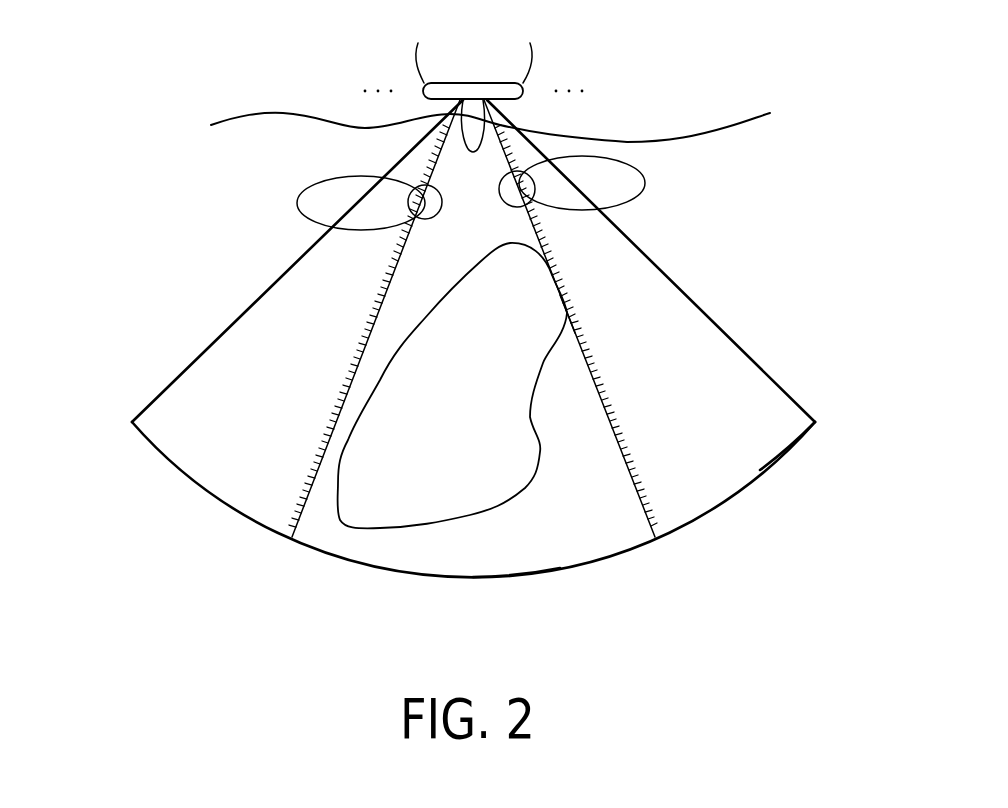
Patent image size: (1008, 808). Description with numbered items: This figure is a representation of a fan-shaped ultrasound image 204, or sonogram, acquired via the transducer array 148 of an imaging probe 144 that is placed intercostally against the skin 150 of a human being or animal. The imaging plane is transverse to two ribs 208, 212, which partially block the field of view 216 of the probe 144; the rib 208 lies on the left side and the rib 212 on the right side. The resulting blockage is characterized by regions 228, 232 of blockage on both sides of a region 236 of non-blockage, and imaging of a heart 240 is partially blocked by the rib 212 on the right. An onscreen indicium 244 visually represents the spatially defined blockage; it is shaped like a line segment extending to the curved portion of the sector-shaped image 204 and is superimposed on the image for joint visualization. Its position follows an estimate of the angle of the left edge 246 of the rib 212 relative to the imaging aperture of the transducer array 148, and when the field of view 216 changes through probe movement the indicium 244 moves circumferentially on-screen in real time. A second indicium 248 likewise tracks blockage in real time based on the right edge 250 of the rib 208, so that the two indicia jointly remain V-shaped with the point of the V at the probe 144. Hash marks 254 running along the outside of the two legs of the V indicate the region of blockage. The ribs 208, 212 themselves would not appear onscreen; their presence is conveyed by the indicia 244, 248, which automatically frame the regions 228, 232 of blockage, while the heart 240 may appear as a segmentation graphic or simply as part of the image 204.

The imaging probe 144 is at (408, 50).
The transducer array 148 is at (487, 83).
The skin 150 is at (733, 122).
The ultrasound image 204 is at (700, 558).
The rib 208 is at (297, 203).
The rib 212 is at (645, 183).
The field of view 216 is at (705, 312).
The region of blockage 228 is at (178, 407).
The region of blockage 232 is at (770, 407).
The region of non-blockage 236 is at (528, 550).
The heart 240 is at (387, 510).
The onscreen indicium 244 is at (622, 440).
The left edge 246 is at (497, 205).
The second indicium 248 is at (328, 432).
The right edge 250 is at (445, 208).
The hash marks 254 is at (592, 330).